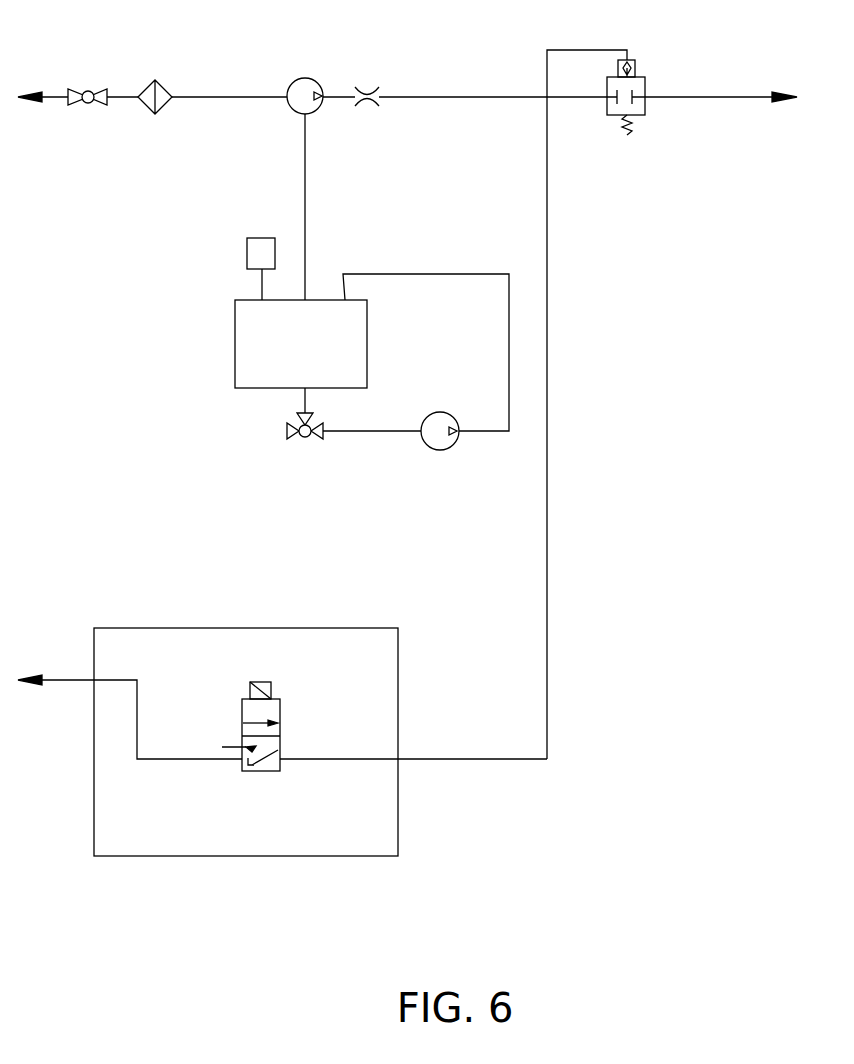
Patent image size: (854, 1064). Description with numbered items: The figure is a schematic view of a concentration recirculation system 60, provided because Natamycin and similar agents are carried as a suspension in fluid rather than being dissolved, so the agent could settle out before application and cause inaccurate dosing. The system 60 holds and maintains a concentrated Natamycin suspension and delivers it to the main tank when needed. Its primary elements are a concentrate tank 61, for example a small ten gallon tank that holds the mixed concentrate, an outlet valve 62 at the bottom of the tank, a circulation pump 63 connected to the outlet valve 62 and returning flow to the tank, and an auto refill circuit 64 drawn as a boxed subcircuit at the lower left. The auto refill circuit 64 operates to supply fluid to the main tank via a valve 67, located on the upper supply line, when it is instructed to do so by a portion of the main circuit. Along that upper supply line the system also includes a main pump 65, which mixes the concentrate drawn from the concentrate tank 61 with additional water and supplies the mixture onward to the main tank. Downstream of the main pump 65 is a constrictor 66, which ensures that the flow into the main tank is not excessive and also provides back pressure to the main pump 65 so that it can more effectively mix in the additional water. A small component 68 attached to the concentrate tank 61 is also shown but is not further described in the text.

The concentration recirculation system 60 is at (645, 676).
The concentrate tank 61 is at (250, 343).
The outlet valve 62 is at (288, 427).
The circulation pump 63 is at (440, 437).
The auto refill circuit 64 is at (368, 660).
The main pump 65 is at (297, 91).
The constrictor 66 is at (367, 92).
The valve 67 is at (638, 107).
The sensor 68 is at (255, 254).